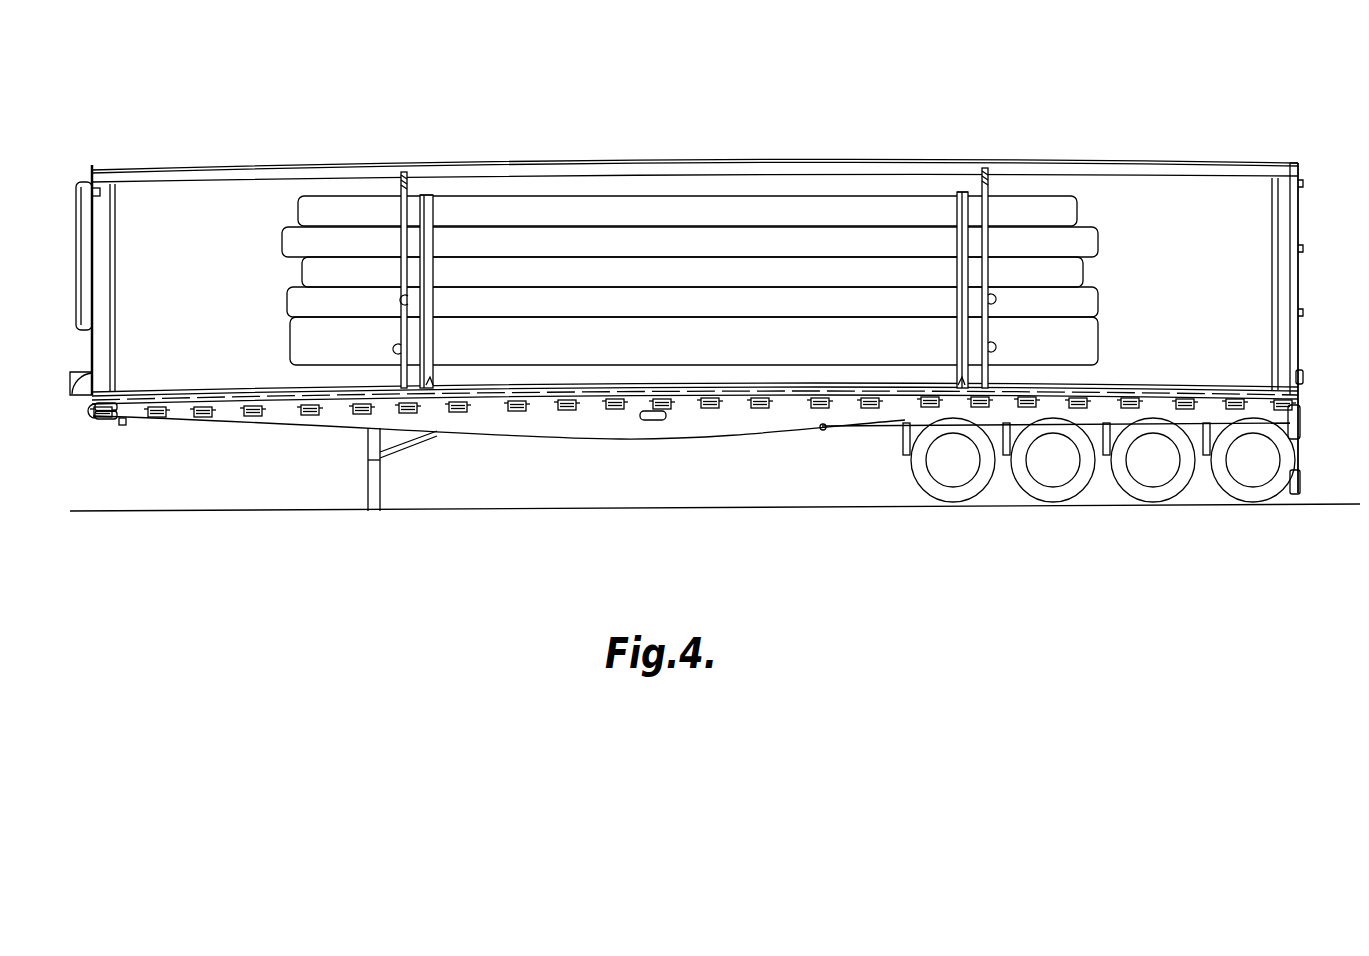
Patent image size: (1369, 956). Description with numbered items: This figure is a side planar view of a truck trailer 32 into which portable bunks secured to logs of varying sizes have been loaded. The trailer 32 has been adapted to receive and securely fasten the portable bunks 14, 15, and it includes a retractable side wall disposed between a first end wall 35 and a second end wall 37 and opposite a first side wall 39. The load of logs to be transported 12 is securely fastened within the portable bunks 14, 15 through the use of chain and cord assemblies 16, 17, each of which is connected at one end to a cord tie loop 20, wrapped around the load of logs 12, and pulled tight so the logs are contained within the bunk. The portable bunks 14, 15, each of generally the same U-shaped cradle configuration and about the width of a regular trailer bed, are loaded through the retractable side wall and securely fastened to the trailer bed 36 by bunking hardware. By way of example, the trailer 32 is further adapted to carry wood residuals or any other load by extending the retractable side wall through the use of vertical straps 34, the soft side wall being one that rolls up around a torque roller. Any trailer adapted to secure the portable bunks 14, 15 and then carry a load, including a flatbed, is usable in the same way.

The load of logs 12 is at (860, 195).
The portable bunk 14 is at (950, 229).
The portable bunk 15 is at (446, 247).
The chain and cord assembly 16 is at (975, 200).
The chain and cord assembly 17 is at (423, 210).
The cord tie loop 20 is at (412, 300).
The trailer 32 is at (647, 134).
The vertical straps 34 is at (400, 188).
The first end wall 35 is at (1295, 222).
The trailer bed 36 is at (780, 392).
The second end wall 37 is at (90, 222).
The first side wall 39 is at (1202, 322).